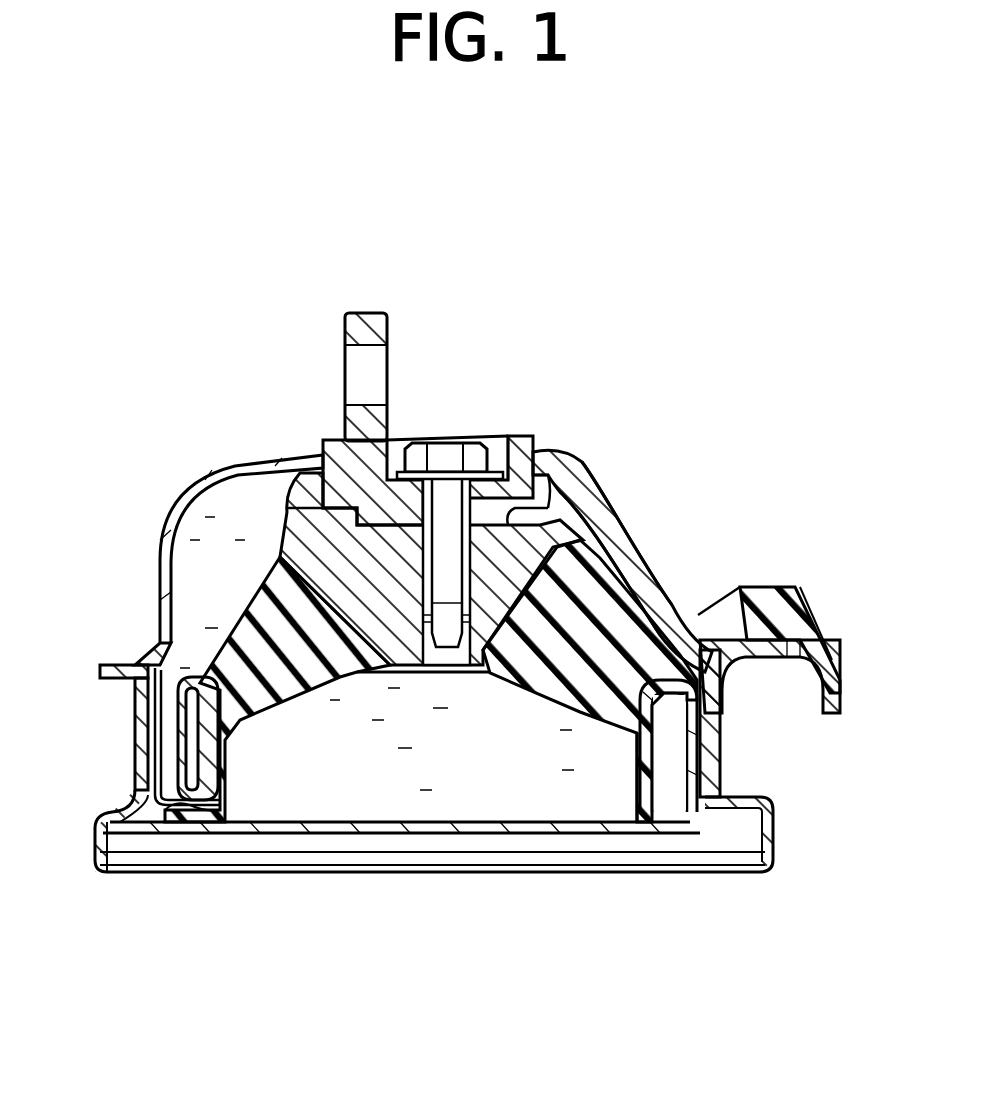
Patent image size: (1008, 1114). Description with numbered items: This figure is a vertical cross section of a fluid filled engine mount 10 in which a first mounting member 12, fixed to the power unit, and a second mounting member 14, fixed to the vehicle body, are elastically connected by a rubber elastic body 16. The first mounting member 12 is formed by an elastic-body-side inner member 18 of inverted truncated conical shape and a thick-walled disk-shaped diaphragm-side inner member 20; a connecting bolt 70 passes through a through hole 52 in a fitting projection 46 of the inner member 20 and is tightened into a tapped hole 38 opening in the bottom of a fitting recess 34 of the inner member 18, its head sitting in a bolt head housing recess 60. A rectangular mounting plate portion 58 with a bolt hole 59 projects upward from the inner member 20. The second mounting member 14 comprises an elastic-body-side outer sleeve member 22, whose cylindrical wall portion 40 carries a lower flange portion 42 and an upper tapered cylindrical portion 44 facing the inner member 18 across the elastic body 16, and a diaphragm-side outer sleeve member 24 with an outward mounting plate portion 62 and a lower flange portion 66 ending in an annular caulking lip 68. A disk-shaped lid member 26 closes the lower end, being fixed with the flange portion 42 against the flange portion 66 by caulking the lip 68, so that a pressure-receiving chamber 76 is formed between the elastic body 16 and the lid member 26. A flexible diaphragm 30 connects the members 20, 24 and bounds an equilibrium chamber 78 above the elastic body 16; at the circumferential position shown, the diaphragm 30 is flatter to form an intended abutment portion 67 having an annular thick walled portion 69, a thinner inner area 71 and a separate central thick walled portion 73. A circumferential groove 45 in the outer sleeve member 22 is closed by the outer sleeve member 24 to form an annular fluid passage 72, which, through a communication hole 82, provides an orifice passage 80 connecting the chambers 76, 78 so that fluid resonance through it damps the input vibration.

The engine mount 10 is at (496, 312).
The first mounting member 12 is at (207, 363).
The second mounting member 14 is at (862, 767).
The rubber elastic body 16 is at (297, 687).
The elastic-body-side inner member 18 is at (320, 537).
The diaphragm-side inner member 20 is at (340, 440).
The elastic-body-side outer sleeve member 22 is at (723, 787).
The diaphragm-side outer sleeve member 24 is at (672, 757).
The lid member 26 is at (470, 826).
The flexible diaphragm 30 is at (170, 528).
The fitting recess 34 is at (425, 547).
The tapped hole 38 is at (460, 575).
The cylindrical wall portion 40 is at (195, 753).
The flange portion 42 is at (140, 813).
The tapered cylindrical portion 44 is at (738, 750).
The circumferential groove 45 is at (685, 800).
The fitting projection 46 is at (562, 507).
The through hole 52 is at (465, 517).
The mounting plate portion 58 is at (363, 322).
The bolt hole 59 is at (365, 403).
The bolt head housing recess 60 is at (505, 445).
The mounting plate portion 62 is at (762, 667).
The flange portion 66 is at (737, 800).
The intended abutment portion 67 is at (662, 533).
The annular caulking lip 68 is at (87, 853).
The annular thick walled portion 69 is at (660, 607).
The connecting bolt 70 is at (447, 457).
The inner area 71 is at (603, 508).
The annular fluid passage 72 is at (172, 775).
The central thick walled portion 73 is at (620, 567).
The pressure-receiving chamber 76 is at (463, 771).
The equilibrium chamber 78 is at (228, 574).
The orifice passage 80 is at (128, 744).
The communication hole 82 is at (143, 683).